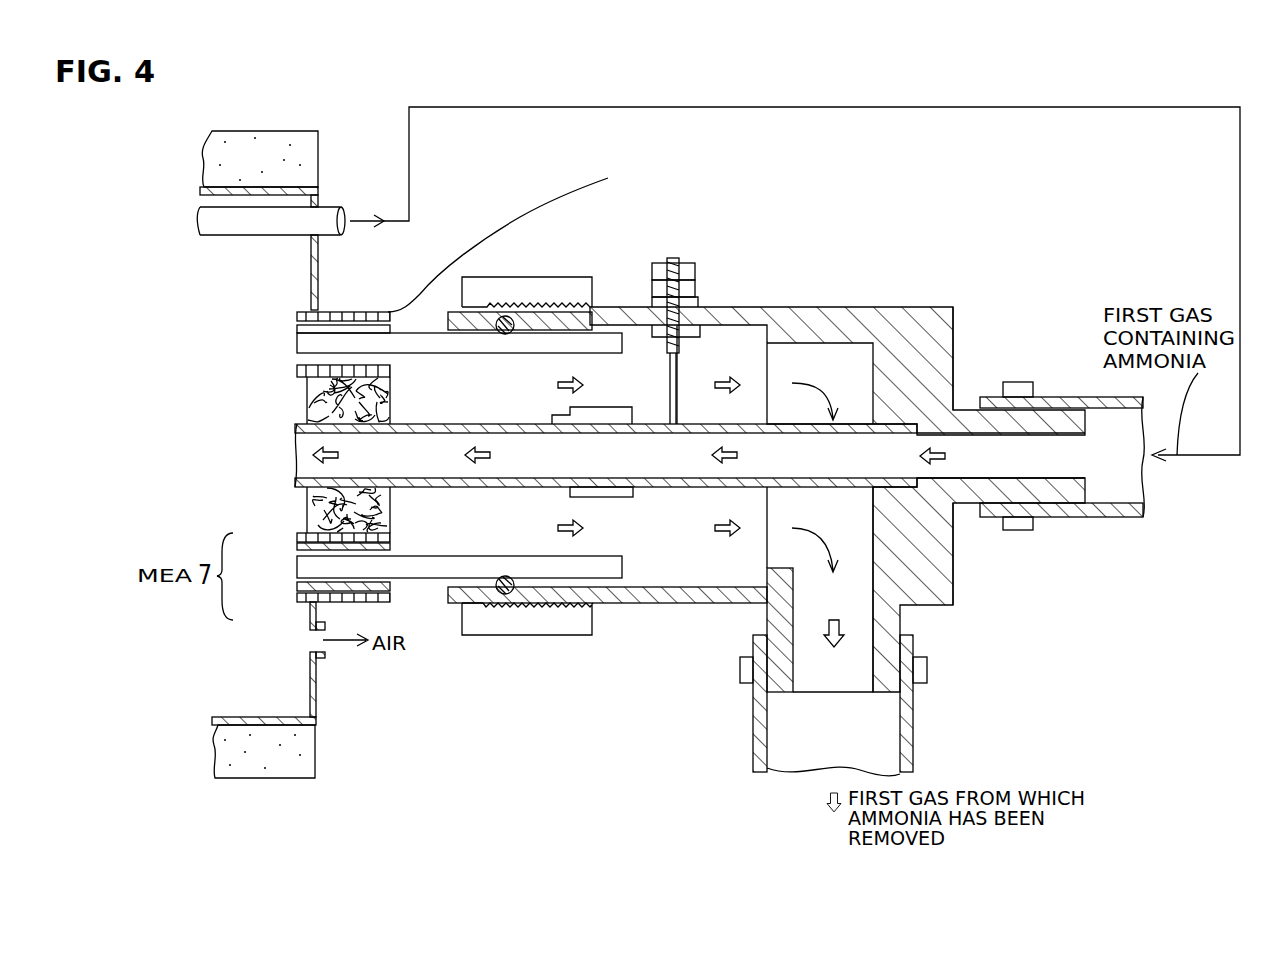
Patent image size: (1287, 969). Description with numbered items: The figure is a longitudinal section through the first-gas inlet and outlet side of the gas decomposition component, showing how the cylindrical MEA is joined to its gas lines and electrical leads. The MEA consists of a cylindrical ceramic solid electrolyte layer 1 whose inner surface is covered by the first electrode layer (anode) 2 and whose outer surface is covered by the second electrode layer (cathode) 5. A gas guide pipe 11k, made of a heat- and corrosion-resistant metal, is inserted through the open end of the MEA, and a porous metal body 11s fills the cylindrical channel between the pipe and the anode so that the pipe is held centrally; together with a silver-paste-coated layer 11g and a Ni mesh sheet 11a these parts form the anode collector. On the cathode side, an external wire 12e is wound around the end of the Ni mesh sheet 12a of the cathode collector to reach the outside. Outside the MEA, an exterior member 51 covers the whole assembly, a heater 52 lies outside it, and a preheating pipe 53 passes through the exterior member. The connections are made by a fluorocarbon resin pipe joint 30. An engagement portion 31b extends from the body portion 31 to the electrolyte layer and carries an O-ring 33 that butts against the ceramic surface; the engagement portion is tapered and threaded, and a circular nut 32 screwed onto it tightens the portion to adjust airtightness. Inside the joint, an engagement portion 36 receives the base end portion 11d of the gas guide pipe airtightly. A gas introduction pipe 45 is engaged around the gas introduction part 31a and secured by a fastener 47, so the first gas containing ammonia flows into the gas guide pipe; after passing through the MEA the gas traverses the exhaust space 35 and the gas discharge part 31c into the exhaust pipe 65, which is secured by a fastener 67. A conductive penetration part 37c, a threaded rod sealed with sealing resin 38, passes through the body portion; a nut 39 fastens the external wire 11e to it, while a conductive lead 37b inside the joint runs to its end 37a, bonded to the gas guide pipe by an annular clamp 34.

The solid electrolyte layer 1 is at (305, 568).
The first electrode layer (anode) 2 is at (303, 548).
The second electrode layer (cathode) 5 is at (303, 590).
The Ni mesh sheet 11a is at (392, 370).
The base end portion 11d is at (886, 424).
The external wire 11e is at (693, 322).
The silver-paste-coated layer 11g is at (298, 355).
The gas guide pipe 11k is at (457, 488).
The porous metal body 11s is at (392, 405).
The Ni mesh sheet 12a is at (300, 312).
The external wire 12e is at (545, 203).
The pipe joint 30 is at (946, 642).
The body portion 31 is at (693, 597).
The gas introduction part 31a is at (970, 497).
The engagement portion 31b is at (567, 595).
The gas discharge part 31c is at (773, 612).
The circular nut 32 is at (545, 623).
The O-ring 33 is at (495, 600).
The annular clamp 34 is at (593, 498).
The exhaust space 35 is at (864, 387).
The engagement portion 36 is at (903, 424).
The another end of conductive lead 37a is at (560, 413).
The conductive lead 37b is at (670, 368).
The conductive penetration part 37c is at (653, 307).
The sealing resin 38 is at (693, 328).
The nut 39 is at (697, 263).
The gas introduction pipe 45 is at (1060, 516).
The fastener 47 is at (1018, 524).
The exterior member 51 is at (237, 192).
The heater 52 is at (268, 150).
The preheating pipe 53 is at (212, 237).
The exhaust pipe 65 is at (755, 742).
The fastener 67 is at (745, 672).